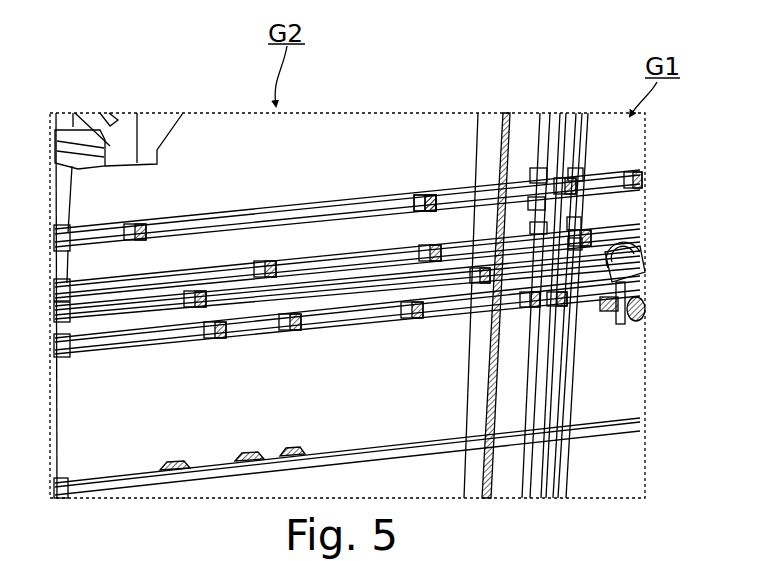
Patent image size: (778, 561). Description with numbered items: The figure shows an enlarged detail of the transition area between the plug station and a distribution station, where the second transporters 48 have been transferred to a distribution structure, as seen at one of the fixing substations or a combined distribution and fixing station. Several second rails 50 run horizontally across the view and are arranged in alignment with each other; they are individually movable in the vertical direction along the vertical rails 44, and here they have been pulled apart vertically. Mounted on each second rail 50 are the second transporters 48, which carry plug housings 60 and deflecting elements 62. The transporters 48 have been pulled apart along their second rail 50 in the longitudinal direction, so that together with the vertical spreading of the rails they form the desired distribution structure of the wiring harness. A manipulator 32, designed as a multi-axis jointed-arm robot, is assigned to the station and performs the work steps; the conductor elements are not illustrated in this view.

The manipulator 32 is at (636, 250).
The vertical rails 44 is at (553, 115).
The second transporters 48 is at (424, 200).
The second rails 50 is at (308, 262).
The plug housings 60 is at (437, 213).
The deflecting elements 62 is at (303, 340).